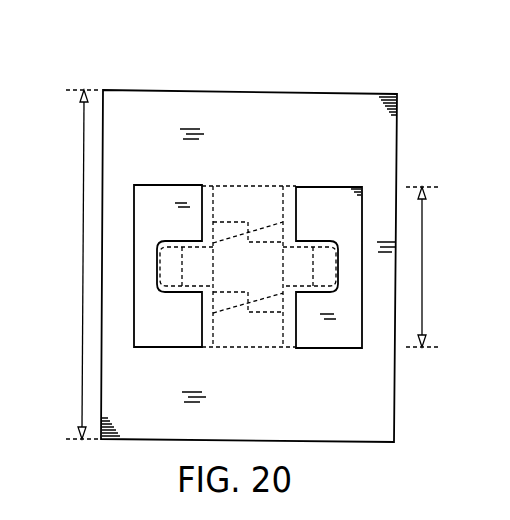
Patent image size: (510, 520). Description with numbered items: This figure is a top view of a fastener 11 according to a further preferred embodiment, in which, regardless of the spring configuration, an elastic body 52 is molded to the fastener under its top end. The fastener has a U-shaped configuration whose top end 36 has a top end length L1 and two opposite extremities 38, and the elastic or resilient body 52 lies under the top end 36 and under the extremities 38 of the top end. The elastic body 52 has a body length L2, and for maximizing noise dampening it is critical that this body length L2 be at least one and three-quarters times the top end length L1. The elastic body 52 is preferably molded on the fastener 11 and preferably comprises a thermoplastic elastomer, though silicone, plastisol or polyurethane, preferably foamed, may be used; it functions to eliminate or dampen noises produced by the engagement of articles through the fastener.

The fastener 11 is at (142, 64).
The elastic body 52 is at (192, 103).
The top end 36 is at (327, 203).
The extremities of the top end 38 is at (254, 190).
The top end length L1 is at (422, 222).
The body length L2 is at (83, 167).